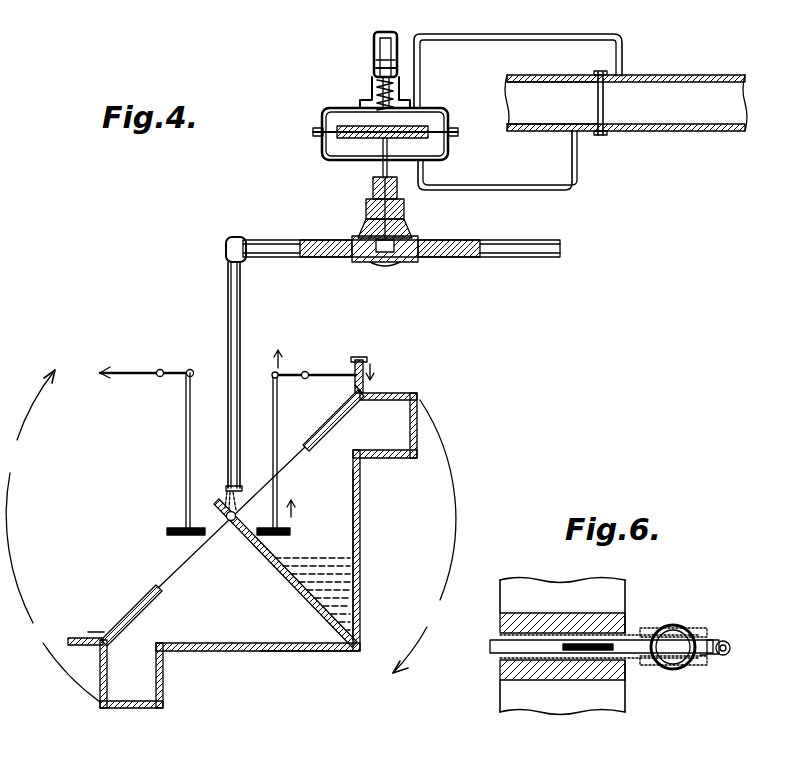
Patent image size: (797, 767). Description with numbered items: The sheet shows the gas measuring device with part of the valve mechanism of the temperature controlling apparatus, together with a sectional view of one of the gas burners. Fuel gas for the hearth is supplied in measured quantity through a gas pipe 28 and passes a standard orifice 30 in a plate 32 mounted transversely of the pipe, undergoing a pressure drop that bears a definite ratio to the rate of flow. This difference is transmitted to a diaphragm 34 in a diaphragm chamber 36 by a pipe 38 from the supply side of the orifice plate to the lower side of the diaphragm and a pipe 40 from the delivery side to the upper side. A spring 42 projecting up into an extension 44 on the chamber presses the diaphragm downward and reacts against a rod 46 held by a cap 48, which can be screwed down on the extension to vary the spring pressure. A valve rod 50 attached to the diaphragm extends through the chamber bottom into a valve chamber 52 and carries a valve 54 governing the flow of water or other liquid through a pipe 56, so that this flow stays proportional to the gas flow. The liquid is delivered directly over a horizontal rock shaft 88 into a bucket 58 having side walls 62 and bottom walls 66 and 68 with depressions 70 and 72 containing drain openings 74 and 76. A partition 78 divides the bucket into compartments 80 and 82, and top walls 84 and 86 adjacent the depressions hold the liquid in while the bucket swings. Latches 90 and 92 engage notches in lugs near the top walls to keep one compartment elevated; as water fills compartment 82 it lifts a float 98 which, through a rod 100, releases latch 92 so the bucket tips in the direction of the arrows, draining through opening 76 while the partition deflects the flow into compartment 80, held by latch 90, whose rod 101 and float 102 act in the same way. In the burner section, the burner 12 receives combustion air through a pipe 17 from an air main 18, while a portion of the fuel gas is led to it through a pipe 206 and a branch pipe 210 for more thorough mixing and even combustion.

In FIG. 6, the burner 12 is at (522, 655).
In FIG. 6, the air pipe 17 is at (633, 668).
In FIG. 6, the air main 18 is at (681, 626).
In FIG. 6, the gas pipe 206 is at (727, 641).
In FIG. 6, the branch pipe 210 is at (707, 658).
In FIG. 4, the gas pipe 28 is at (524, 122).
In FIG. 4, the standard orifice 30 is at (598, 97).
In FIG. 4, the orifice plate 32 is at (605, 116).
In FIG. 4, the diaphragm 34 is at (420, 128).
In FIG. 4, the diaphragm chamber 36 is at (449, 118).
In FIG. 4, the pipe 38 is at (495, 192).
In FIG. 4, the pipe 40 is at (480, 36).
In FIG. 4, the spring 42 is at (347, 110).
In FIG. 4, the extension 44 is at (378, 95).
In FIG. 4, the rod 46 is at (376, 70).
In FIG. 4, the cap 48 is at (392, 42).
In FIG. 4, the valve rod 50 is at (378, 176).
In FIG. 4, the valve chamber 52 is at (402, 224).
In FIG. 4, the valve 54 is at (366, 238).
In FIG. 4, the pipe 56 is at (472, 250).
In FIG. 4, the bucket 58 is at (362, 518).
In FIG. 4, the side wall 62 is at (175, 574).
In FIG. 4, the bottom wall 66 is at (284, 652).
In FIG. 4, the bottom wall 68 is at (361, 556).
In FIG. 4, the depression 70 is at (150, 676).
In FIG. 4, the depression 72 is at (400, 395).
In FIG. 4, the drain opening 74 is at (133, 708).
In FIG. 4, the drain opening 76 is at (417, 430).
In FIG. 4, the partition 78 is at (266, 557).
In FIG. 4, the compartment 80 is at (233, 650).
In FIG. 4, the compartment 82 is at (338, 498).
In FIG. 4, the top wall 84 is at (128, 618).
In FIG. 4, the top wall 86 is at (332, 420).
In FIG. 4, the rock shaft 88 is at (228, 522).
In FIG. 4, the latch 90 is at (125, 378).
In FIG. 4, the latch 92 is at (296, 378).
In FIG. 4, the float 98 is at (294, 532).
In FIG. 4, the rod 100 is at (273, 452).
In FIG. 4, the rod 101 is at (186, 452).
In FIG. 4, the float 102 is at (166, 531).